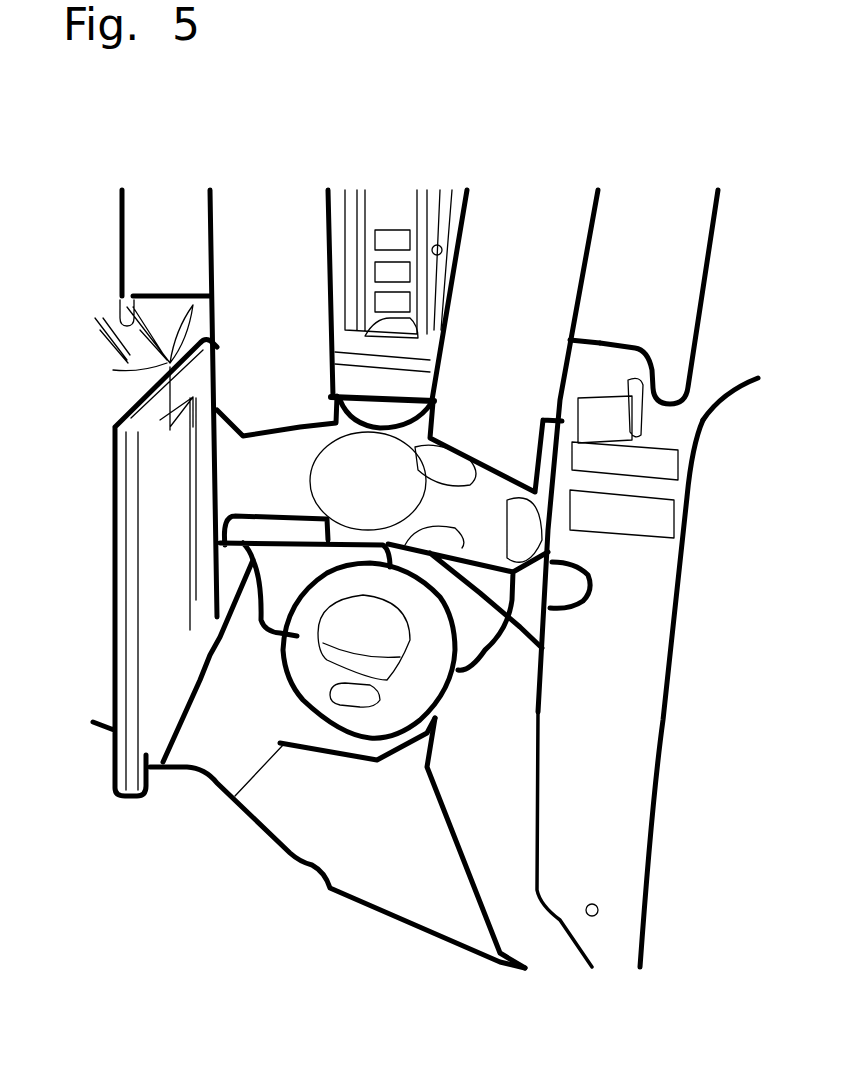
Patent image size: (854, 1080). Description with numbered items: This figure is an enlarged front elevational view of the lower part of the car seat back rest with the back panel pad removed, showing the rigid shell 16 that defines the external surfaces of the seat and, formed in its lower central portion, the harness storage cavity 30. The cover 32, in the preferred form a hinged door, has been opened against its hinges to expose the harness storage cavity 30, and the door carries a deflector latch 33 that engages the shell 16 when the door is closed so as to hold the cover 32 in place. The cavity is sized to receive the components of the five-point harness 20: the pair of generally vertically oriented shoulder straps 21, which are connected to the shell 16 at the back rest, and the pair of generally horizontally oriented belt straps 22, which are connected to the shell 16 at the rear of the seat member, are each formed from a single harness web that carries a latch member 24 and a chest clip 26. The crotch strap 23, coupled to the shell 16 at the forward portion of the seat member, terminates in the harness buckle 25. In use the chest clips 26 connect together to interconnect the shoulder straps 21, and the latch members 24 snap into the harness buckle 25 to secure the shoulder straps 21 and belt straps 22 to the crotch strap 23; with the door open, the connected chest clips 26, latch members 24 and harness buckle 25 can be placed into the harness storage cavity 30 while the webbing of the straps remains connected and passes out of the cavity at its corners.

The rigid shell 16 is at (630, 580).
The five-point harness 20 is at (400, 140).
The shoulder straps 21 is at (270, 250).
The belt straps 22 is at (240, 723).
The crotch strap 23 is at (358, 745).
The latch member 24 is at (300, 580).
The harness buckle 25 is at (422, 690).
The chest clip 26 is at (267, 487).
The harness storage cavity 30 is at (557, 573).
The cover 32 is at (128, 301).
The deflector latch 33 is at (140, 800).